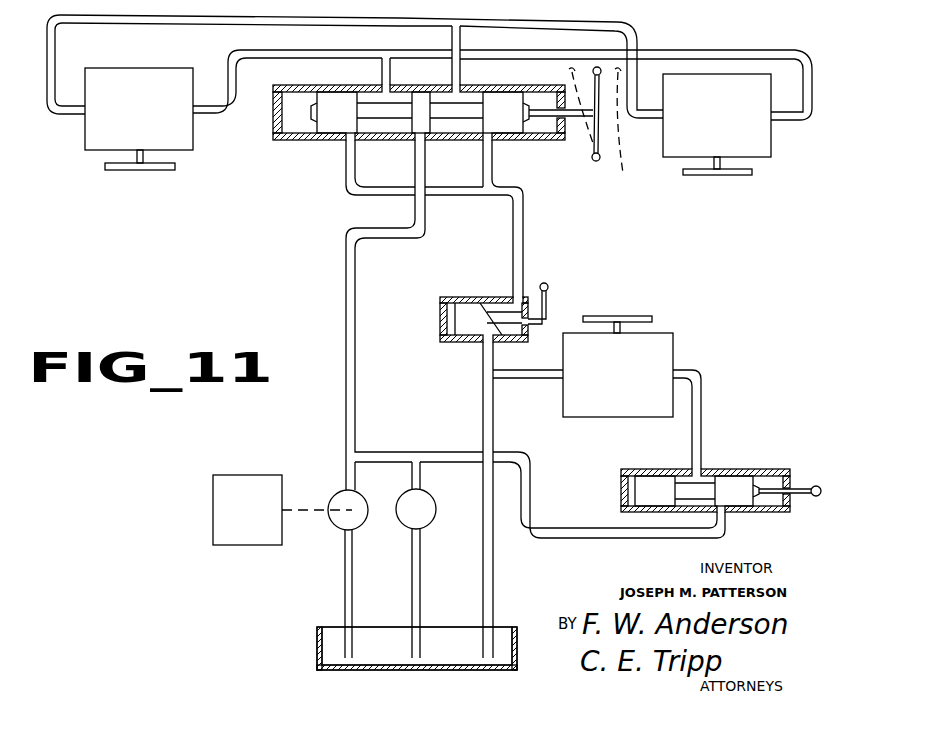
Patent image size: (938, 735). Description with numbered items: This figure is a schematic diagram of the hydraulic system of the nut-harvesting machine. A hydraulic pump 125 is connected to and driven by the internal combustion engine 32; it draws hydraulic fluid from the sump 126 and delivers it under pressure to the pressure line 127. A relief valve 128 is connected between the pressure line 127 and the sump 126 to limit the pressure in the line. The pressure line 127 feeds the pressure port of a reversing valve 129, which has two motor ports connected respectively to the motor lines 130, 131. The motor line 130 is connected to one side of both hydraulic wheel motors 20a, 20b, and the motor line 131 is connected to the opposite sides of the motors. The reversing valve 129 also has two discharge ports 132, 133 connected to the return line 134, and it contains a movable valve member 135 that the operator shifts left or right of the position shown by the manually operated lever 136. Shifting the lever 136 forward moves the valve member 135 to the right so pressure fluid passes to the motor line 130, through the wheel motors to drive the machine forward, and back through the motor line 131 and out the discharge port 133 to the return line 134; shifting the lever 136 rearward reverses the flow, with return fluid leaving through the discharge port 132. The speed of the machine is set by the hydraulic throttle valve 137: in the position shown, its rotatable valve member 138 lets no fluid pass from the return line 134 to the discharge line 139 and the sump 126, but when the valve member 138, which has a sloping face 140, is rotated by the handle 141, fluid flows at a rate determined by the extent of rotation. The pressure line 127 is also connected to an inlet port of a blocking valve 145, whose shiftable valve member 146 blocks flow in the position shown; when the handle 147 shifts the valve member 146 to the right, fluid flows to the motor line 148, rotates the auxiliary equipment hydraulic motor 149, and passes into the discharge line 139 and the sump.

The hydraulic motor 20a is at (167, 121).
The hydraulic motor 20b is at (745, 129).
The internal combustion engine 32 is at (265, 527).
The hydraulic pump 125 is at (337, 493).
The sump 126 is at (316, 641).
The pressure line 127 is at (345, 316).
The relief valve 128 is at (427, 526).
The reversing valve 129 is at (320, 85).
The motor line 130 is at (257, 48).
The motor line 131 is at (153, 23).
The discharge port 132 is at (352, 134).
The discharge port 133 is at (485, 140).
The return line 134 is at (523, 244).
The valve member 135 is at (465, 108).
The lever 136 is at (598, 134).
The hydraulic throttle valve 137 is at (478, 303).
The rotatable valve member 138 is at (462, 303).
The sloping face 140 is at (512, 300).
The handle 141 is at (548, 304).
The discharge line 139 is at (483, 408).
The blocking valve 145 is at (708, 472).
The shiftable valve member 146 is at (685, 483).
The handle 147 is at (818, 487).
The motor line 148 is at (702, 408).
The auxiliary equipment hydraulic motor 149 is at (642, 392).